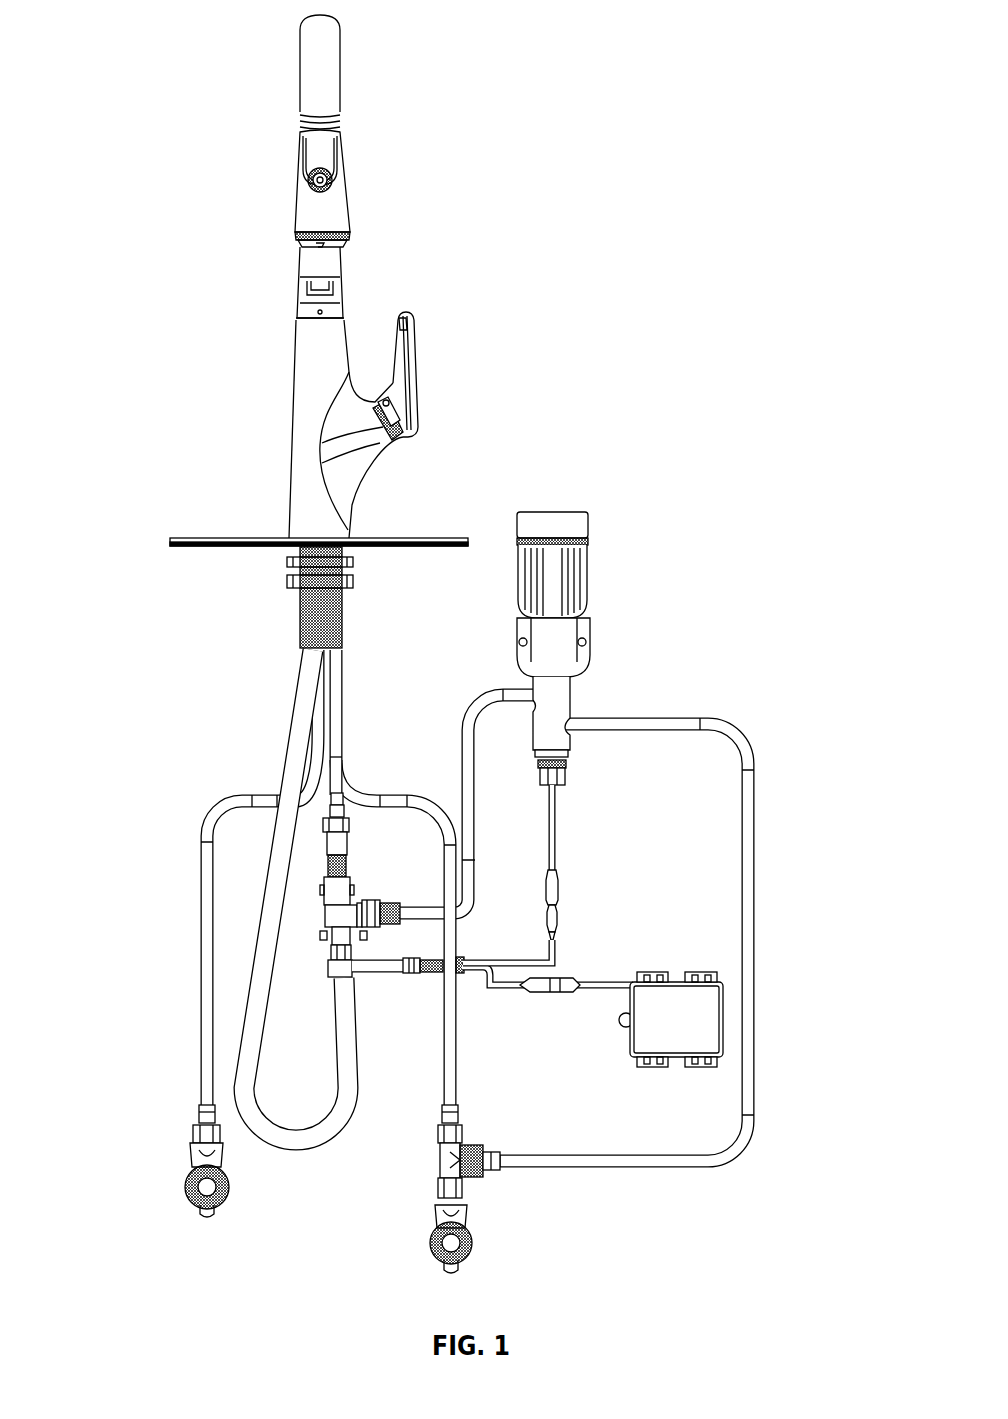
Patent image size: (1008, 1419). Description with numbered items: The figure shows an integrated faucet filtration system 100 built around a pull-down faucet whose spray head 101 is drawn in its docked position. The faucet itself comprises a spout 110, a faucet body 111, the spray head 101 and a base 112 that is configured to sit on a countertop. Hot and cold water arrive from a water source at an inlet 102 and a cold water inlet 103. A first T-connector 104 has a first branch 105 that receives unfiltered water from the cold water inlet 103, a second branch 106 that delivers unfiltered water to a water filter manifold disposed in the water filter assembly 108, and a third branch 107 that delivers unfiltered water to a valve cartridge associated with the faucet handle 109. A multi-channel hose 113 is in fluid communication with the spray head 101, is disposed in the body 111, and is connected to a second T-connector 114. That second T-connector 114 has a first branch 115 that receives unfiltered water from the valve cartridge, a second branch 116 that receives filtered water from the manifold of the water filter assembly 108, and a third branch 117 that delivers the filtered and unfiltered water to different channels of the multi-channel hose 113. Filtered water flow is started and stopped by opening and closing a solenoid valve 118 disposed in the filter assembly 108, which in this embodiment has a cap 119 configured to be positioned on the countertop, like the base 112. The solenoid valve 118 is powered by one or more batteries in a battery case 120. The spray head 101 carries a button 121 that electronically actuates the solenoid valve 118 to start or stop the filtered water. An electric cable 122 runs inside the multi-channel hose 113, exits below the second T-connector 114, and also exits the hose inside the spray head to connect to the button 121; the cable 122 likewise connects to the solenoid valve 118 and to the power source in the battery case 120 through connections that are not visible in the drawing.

The integrated faucet filtration system 100 is at (628, 131).
The spray head 101 is at (319, 188).
The inlet 102 is at (188, 1186).
The cold water inlet 103 is at (436, 1254).
The first T-connector 104 is at (457, 1164).
The first branch 105 is at (440, 1190).
The second branch 106 is at (466, 1148).
The third branch 107 is at (440, 1132).
The water filter assembly 108 is at (570, 708).
The faucet handle 109 is at (416, 366).
The spout 110 is at (342, 48).
The faucet body 111 is at (298, 492).
The base 112 is at (240, 538).
The multi-channel hose 113 is at (303, 737).
The second T-connector 114 is at (356, 883).
The first branch 115 is at (350, 846).
The second branch 116 is at (398, 928).
The third branch 117 is at (322, 936).
The solenoid valve 118 is at (593, 792).
The cap 119 is at (546, 518).
The battery case 120 is at (705, 1017).
The button 121 is at (334, 180).
The electric cable 122 is at (376, 976).